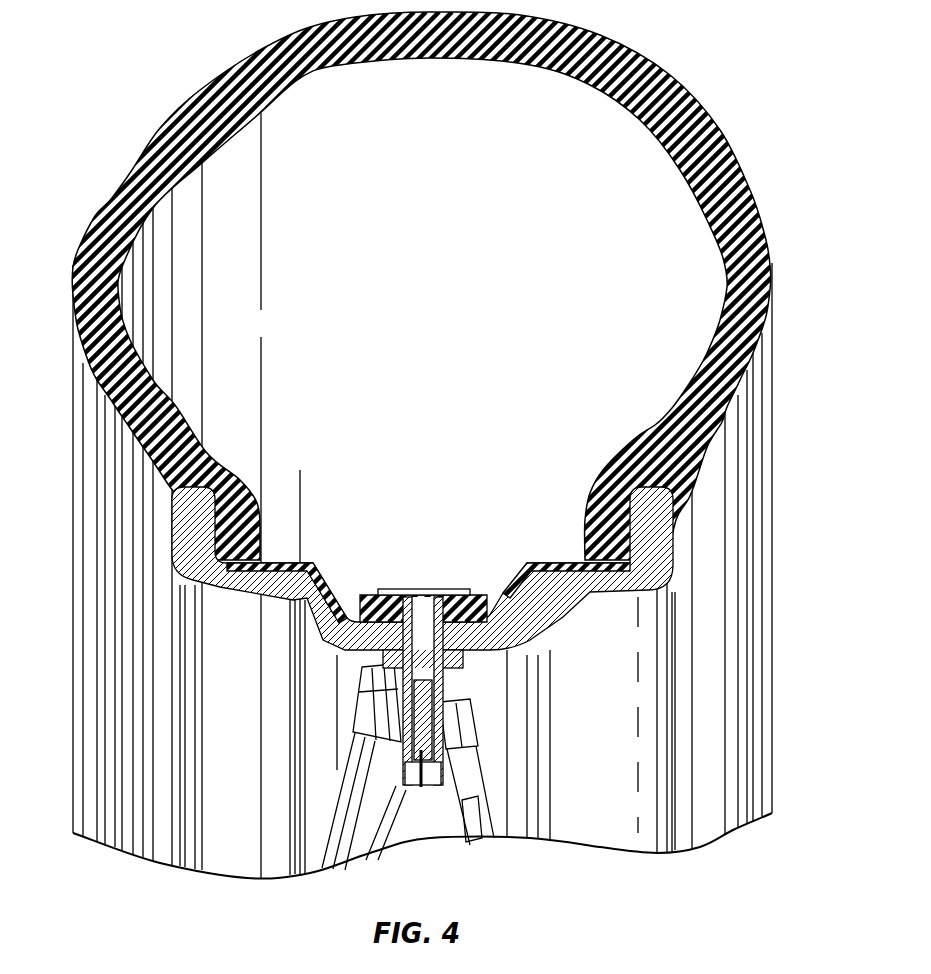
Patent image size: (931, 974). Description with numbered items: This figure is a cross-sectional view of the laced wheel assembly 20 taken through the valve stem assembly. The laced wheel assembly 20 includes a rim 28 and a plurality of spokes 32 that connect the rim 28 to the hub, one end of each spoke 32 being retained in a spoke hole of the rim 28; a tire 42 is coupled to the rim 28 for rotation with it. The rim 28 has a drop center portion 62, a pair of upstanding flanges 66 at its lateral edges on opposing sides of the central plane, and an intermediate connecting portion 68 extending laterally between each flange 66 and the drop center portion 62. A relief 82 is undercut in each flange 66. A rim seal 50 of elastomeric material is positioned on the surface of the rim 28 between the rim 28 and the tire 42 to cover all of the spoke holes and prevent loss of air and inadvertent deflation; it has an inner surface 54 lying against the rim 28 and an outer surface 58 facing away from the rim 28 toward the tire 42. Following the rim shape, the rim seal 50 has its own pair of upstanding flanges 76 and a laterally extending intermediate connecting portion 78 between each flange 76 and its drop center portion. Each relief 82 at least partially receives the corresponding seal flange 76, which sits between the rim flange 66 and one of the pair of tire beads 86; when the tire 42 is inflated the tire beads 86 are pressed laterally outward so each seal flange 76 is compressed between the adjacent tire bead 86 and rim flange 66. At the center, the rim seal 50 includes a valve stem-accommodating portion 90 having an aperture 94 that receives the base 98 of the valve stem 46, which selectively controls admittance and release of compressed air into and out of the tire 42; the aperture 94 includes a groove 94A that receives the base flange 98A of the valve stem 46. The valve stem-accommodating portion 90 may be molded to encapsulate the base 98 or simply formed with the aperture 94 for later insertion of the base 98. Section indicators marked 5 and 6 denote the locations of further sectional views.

The laced wheel assembly 20 is at (465, 469).
The tire 42 is at (147, 167).
The rim 28 is at (220, 590).
The spokes 32 is at (356, 853).
The valve stem 46 is at (445, 748).
The rim seal 50 is at (465, 401).
The inner surface 54 is at (327, 610).
The outer surface 58 is at (313, 560).
The drop center portion 62 is at (477, 650).
The upstanding flanges 66 is at (190, 507).
The intermediate connecting portion 68 is at (220, 593).
The upstanding flanges 76 is at (220, 545).
The intermediate connecting portion 78 is at (277, 563).
The relief 82 is at (207, 537).
The tire beads 86 is at (255, 512).
The valve stem-accommodating portion 90 is at (478, 590).
The aperture 94 is at (420, 595).
The groove 94A is at (373, 595).
The base 98 is at (392, 633).
The base flange 98A is at (460, 596).
The section line 5 is at (235, 542).
The section line 6 is at (422, 552).